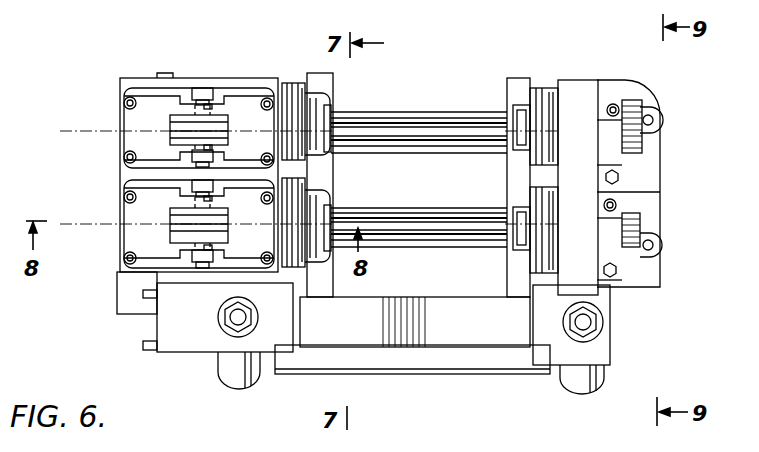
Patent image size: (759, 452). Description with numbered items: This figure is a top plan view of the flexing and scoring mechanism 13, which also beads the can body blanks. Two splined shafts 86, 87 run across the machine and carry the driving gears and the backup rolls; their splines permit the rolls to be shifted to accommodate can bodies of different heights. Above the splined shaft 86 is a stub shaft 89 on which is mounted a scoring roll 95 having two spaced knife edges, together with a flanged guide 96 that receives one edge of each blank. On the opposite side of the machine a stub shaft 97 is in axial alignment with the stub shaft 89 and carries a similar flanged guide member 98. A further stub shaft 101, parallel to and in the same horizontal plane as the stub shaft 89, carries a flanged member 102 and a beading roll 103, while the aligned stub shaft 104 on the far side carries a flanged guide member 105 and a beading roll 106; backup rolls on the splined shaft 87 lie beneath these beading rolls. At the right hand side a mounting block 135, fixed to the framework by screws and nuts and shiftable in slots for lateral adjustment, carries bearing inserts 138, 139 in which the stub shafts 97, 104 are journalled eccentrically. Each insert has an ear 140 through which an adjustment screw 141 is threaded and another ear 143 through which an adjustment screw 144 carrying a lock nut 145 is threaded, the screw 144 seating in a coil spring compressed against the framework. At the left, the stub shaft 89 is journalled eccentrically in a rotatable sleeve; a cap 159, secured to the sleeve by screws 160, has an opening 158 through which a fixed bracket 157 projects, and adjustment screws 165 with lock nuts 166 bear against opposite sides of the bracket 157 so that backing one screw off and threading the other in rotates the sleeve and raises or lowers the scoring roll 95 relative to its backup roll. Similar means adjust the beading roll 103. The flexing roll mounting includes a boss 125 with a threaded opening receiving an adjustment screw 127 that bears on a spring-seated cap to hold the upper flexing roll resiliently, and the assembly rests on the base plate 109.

The valve assembly 13 is at (237, 50).
The splined shaft 86 is at (455, 213).
The splined shaft 87 is at (405, 112).
The stub shaft 89 is at (330, 206).
The scoring roll 95 is at (312, 190).
The flanged guide 96 is at (300, 276).
The stub shaft 97 is at (515, 246).
The flanged guide member 98 is at (548, 273).
The stub shaft 101 is at (328, 109).
The flanged member 102 is at (290, 84).
The beading roll 103 is at (300, 88).
The stub shaft 104 is at (514, 148).
The flanged guide member 105 is at (555, 92).
The beading roll 106 is at (525, 96).
The base plate 109 is at (428, 370).
The boss 125 is at (222, 306).
The adjustment screw 127 is at (237, 318).
The mounting block 135 is at (578, 96).
The bearing insert 138 is at (612, 230).
The bearing insert 139 is at (660, 130).
The ear 140 is at (625, 96).
The adjustment screw 141 is at (619, 110).
The ear 143 is at (620, 178).
The adjustment screw 144 is at (660, 183).
The lock nut 145 is at (616, 170).
The bracket 157 is at (175, 137).
The opening 158 is at (170, 126).
The cap 159 is at (148, 95).
The screws 160 is at (124, 103).
The adjustment screws 165 is at (200, 88).
The lock nuts 166 is at (212, 98).